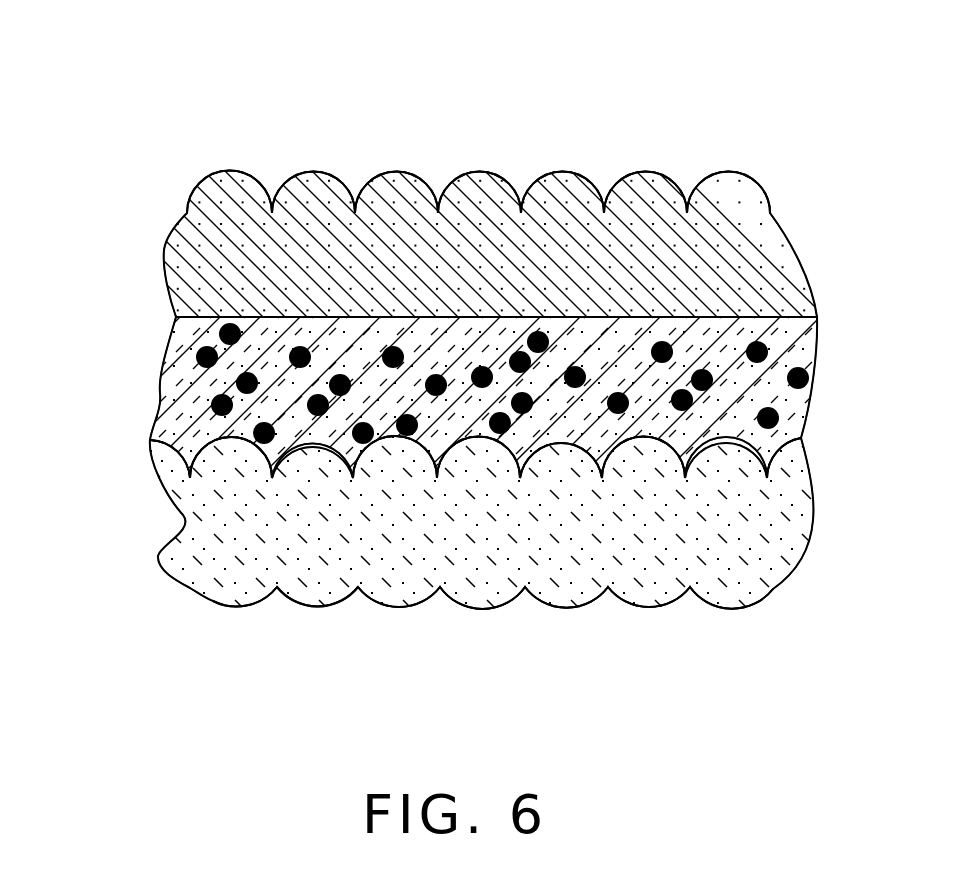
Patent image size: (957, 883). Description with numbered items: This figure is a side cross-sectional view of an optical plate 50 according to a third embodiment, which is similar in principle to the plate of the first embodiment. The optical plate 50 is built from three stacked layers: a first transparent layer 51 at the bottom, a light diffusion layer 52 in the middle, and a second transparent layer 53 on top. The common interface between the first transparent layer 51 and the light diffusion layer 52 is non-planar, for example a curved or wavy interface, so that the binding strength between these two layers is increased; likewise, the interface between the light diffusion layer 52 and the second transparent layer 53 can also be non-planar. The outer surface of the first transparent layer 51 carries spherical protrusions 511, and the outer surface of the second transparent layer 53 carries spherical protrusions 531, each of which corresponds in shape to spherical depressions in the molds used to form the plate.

The optical plate 50 is at (415, 342).
The first transparent layer 51 is at (203, 552).
The spherical protrusions 511 is at (226, 604).
The light diffusion layer 52 is at (183, 393).
The second transparent layer 53 is at (193, 252).
The spherical protrusions 531 is at (217, 178).